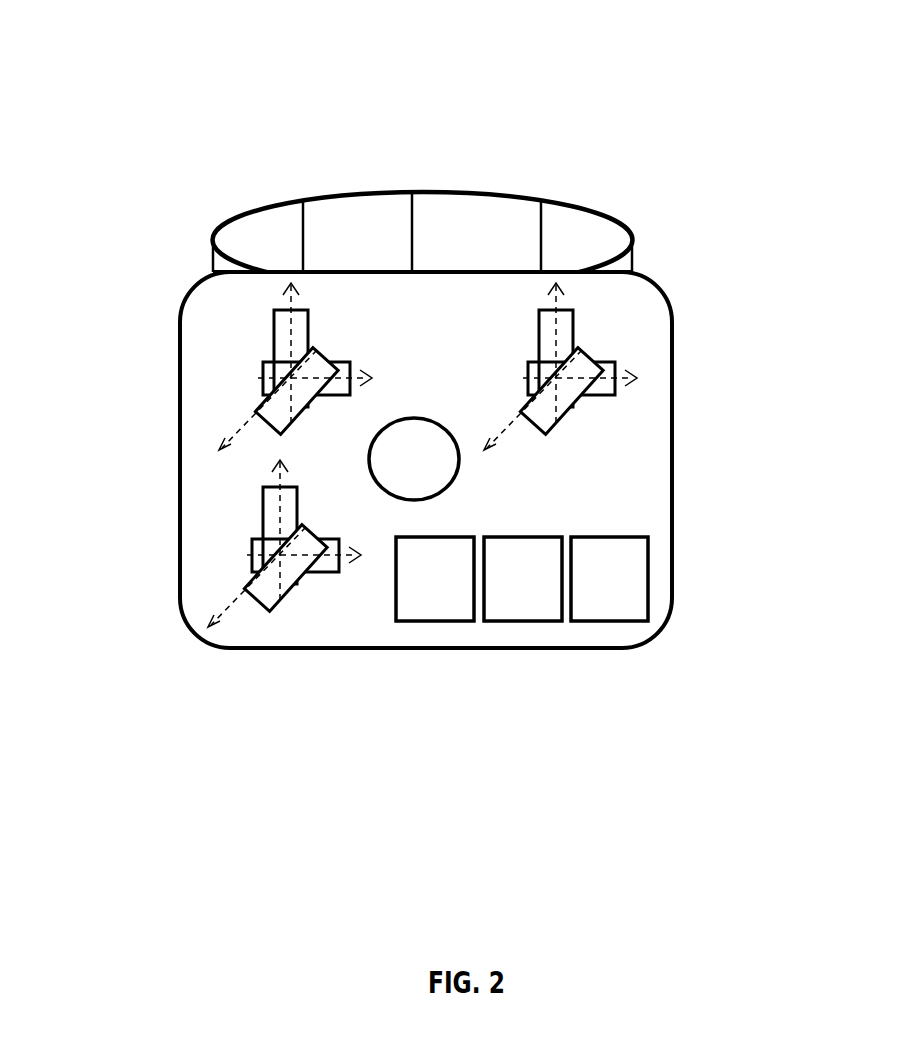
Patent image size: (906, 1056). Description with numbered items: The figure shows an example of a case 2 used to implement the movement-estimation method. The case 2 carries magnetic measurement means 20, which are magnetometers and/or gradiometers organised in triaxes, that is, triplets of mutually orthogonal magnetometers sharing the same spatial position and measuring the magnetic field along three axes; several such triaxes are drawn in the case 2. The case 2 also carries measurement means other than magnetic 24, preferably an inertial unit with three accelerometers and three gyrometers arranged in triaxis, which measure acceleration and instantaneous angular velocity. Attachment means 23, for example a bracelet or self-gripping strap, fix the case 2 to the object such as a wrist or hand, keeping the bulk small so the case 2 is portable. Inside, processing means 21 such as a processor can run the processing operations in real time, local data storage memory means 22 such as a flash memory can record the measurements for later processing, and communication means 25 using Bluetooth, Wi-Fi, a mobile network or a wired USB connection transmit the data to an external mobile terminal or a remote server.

The case 2 is at (409, 368).
The magnetic measurement means 20 is at (426, 455).
The processing means 21 is at (439, 632).
The local data storage memory means 22 is at (524, 632).
The attachment means 23 is at (478, 186).
The measurement means other than magnetic 24 is at (400, 398).
The communication means 25 is at (658, 586).